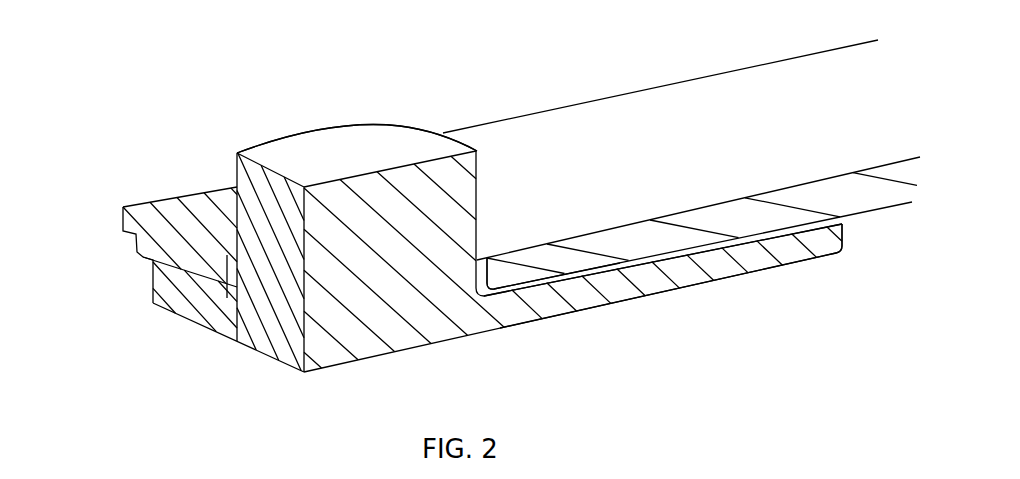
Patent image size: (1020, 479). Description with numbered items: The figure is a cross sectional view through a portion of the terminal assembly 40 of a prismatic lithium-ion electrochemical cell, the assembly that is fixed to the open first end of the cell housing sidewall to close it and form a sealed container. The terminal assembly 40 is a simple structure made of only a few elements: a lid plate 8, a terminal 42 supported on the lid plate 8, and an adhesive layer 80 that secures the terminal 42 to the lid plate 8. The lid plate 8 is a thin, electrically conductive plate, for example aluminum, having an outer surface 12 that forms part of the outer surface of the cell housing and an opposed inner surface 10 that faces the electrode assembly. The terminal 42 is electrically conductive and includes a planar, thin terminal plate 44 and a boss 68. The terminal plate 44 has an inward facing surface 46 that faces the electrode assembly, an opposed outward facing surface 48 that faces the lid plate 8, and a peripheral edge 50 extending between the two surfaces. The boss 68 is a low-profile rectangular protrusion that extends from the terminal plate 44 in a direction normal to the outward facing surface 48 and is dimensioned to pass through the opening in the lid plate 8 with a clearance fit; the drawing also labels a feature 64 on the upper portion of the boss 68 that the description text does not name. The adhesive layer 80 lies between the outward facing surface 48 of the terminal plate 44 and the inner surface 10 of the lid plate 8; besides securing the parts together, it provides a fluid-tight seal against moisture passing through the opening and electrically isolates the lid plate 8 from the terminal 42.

The lid plate 8 is at (678, 115).
The inner surface 10 is at (878, 212).
The outer surface 12 is at (768, 85).
The terminal assembly 40 is at (213, 90).
The terminal 42 is at (257, 327).
The terminal plate 44 is at (557, 307).
The inward facing surface 46 is at (793, 268).
The outward facing surface 48 is at (705, 248).
The peripheral edge 50 is at (143, 280).
The rounded top of block 64 is at (350, 143).
The boss 68 is at (247, 190).
The adhesive layer 80 is at (618, 278).